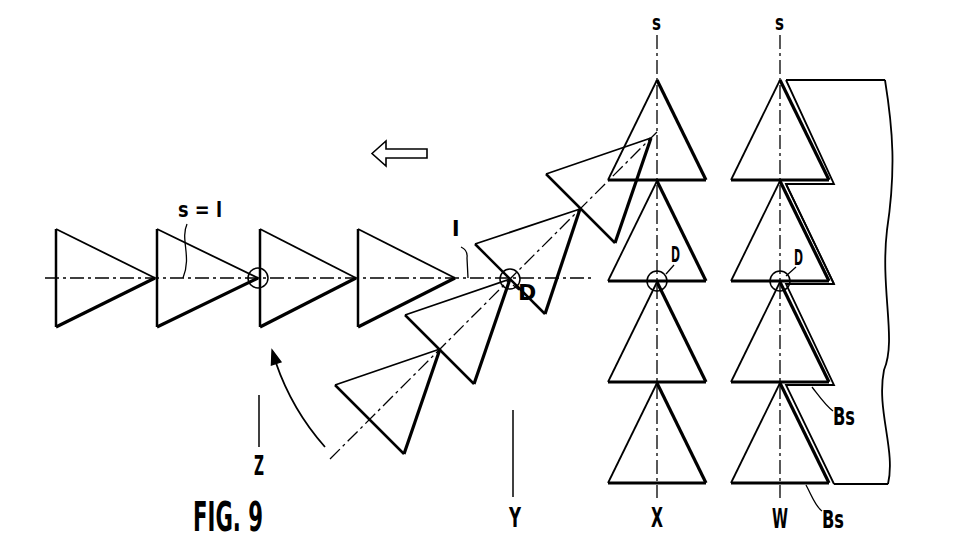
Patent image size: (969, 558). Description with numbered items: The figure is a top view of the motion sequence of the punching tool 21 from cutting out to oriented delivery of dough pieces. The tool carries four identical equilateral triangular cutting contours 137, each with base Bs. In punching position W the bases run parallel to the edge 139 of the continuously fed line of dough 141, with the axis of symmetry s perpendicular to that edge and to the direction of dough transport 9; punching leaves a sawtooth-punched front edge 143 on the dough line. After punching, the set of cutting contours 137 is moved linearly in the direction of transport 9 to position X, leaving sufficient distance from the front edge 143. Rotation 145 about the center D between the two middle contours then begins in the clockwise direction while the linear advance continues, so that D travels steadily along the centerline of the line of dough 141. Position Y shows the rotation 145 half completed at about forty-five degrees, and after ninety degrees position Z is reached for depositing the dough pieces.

The direction of dough transport 9 is at (409, 149).
The punching tool 21 is at (838, 244).
The cutting contours 137 is at (748, 229).
The edge of the line of dough 139 is at (839, 252).
The line of dough 141 is at (877, 326).
The sawtooth-punched front edge 143 is at (820, 130).
The clockwise rotation 145 is at (290, 394).